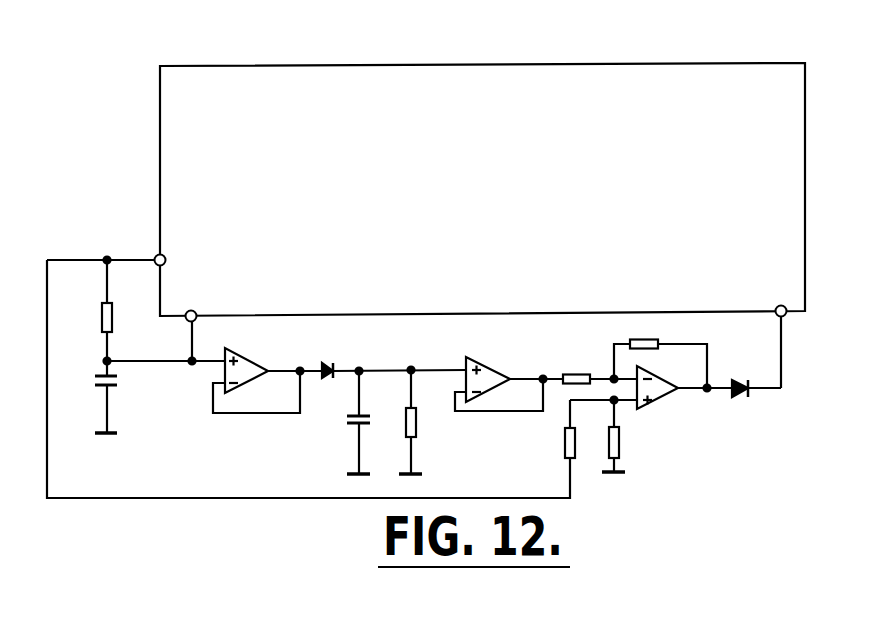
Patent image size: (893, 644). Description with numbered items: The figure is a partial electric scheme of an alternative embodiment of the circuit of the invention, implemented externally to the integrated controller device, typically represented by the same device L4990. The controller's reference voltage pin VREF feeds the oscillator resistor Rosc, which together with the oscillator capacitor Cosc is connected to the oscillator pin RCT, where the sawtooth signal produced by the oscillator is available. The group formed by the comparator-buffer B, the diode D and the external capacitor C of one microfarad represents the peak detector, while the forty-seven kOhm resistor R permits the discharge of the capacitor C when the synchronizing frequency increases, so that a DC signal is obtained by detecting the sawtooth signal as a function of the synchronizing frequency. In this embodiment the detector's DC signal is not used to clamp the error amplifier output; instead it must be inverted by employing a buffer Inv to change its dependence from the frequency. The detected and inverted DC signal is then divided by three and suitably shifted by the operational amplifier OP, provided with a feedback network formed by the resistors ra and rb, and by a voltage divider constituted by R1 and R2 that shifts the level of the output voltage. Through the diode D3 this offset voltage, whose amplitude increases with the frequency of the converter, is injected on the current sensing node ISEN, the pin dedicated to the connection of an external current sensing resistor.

The controller integrated circuit L4990 is at (482, 189).
The reference voltage pin VREF is at (106, 247).
The oscillator pin RCT is at (165, 339).
The current sensing node ISEN is at (811, 347).
The oscillator resistor Rosc is at (82, 310).
The oscillator capacitor Cosc is at (85, 397).
The comparator-buffer B is at (255, 358).
The diode D is at (342, 348).
The external capacitor C is at (333, 422).
The resistor R is at (431, 422).
The inverting buffer Inv is at (495, 367).
The feedback resistor ra is at (593, 354).
The feedback resistor rb is at (660, 352).
The operational amplifier OP is at (651, 392).
The diode D3 is at (754, 404).
The voltage divider resistor R1 is at (538, 440).
The voltage divider resistor R2 is at (648, 439).